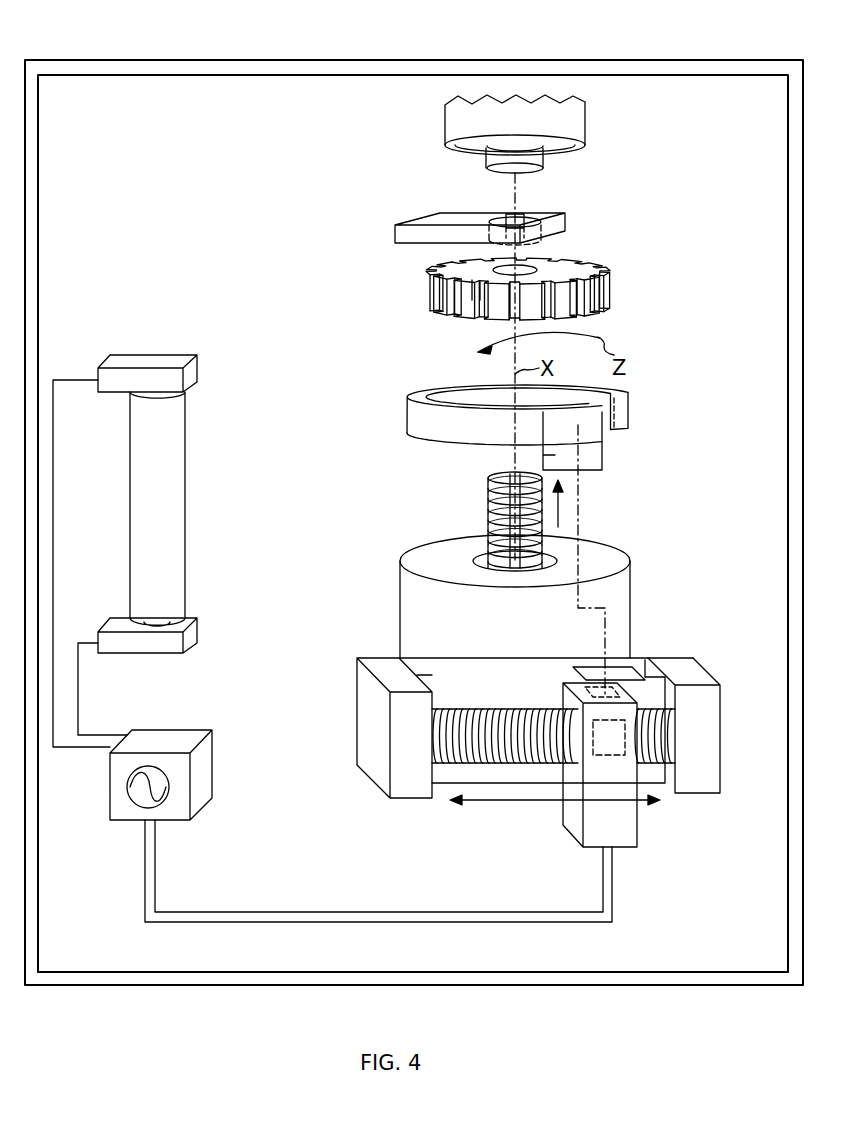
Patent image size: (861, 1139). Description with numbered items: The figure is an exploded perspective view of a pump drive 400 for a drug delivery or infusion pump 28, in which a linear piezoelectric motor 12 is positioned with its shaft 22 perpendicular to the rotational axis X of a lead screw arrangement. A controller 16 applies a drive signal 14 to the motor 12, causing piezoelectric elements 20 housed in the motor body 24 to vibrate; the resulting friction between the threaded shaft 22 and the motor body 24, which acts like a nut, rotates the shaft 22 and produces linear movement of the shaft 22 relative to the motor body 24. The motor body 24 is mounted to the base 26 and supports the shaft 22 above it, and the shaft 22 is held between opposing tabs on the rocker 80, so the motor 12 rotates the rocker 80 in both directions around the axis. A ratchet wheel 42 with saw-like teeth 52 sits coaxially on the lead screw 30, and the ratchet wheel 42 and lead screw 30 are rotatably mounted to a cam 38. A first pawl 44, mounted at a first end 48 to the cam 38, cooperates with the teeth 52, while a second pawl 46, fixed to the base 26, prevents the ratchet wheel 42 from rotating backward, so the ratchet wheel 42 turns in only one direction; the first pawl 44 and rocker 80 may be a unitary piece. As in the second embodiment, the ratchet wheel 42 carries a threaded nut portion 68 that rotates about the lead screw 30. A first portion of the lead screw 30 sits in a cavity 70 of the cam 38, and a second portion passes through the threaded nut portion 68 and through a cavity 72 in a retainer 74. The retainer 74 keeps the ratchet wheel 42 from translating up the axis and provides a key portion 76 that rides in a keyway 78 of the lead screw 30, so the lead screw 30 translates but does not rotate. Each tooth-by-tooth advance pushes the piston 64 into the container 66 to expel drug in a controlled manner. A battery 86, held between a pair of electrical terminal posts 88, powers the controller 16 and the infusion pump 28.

The motor 12 is at (578, 815).
The drive signal 14 is at (140, 789).
The controller 16 is at (212, 768).
The piezoelectric elements 20 is at (597, 675).
The shaft 22 is at (488, 707).
The motor body 24 is at (625, 842).
The base 26 is at (87, 962).
The infusion pump 28 is at (140, 60).
The lead screw 30 is at (486, 494).
The cam 38 is at (400, 592).
The ratchet wheel 42 is at (611, 282).
The first pawl 44 is at (406, 419).
The second pawl 46 is at (638, 418).
The first end 48 is at (603, 455).
The teeth 52 is at (430, 296).
The piston 64 is at (500, 154).
The container 66 is at (586, 121).
The threaded nut portion 68 is at (545, 268).
The cavity 70 is at (492, 565).
The cavity 72 is at (500, 222).
The retainer 74 is at (408, 223).
The key portion 76 is at (523, 214).
The keyway 78 is at (509, 522).
The rocker 80 is at (357, 736).
The battery 86 is at (173, 516).
The electrical terminal posts 88 is at (150, 358).
The pump drive 400 is at (155, 168).